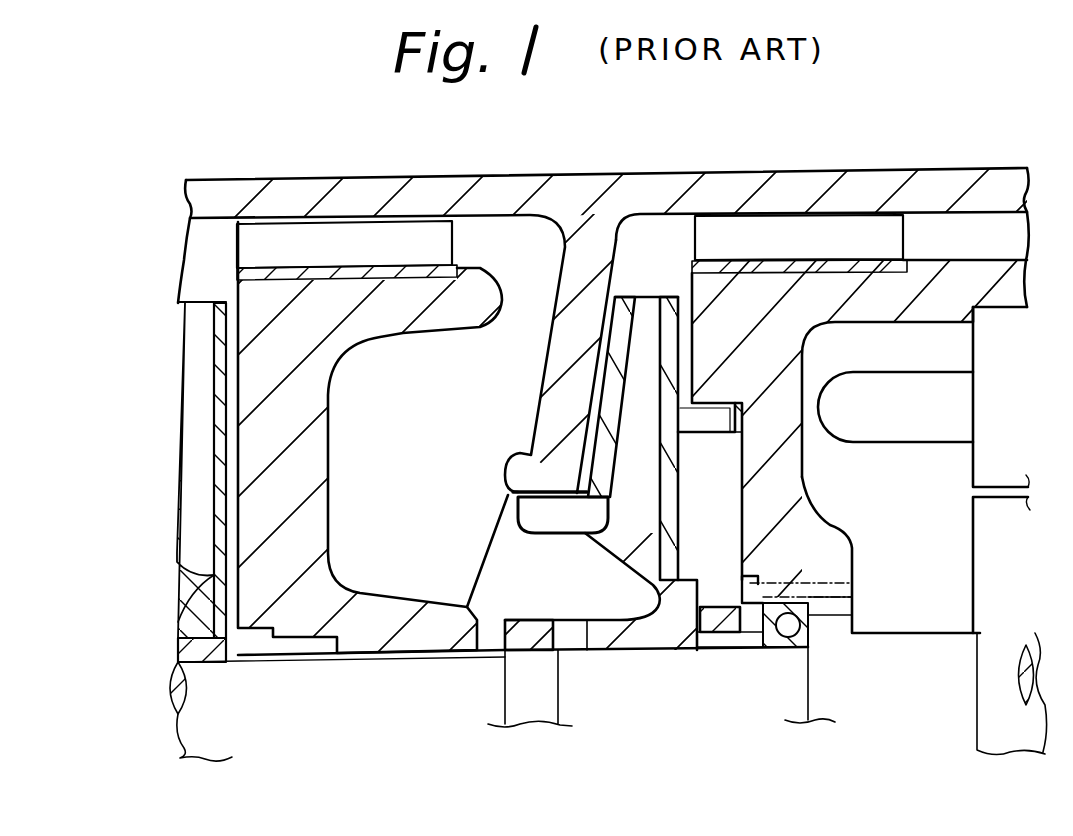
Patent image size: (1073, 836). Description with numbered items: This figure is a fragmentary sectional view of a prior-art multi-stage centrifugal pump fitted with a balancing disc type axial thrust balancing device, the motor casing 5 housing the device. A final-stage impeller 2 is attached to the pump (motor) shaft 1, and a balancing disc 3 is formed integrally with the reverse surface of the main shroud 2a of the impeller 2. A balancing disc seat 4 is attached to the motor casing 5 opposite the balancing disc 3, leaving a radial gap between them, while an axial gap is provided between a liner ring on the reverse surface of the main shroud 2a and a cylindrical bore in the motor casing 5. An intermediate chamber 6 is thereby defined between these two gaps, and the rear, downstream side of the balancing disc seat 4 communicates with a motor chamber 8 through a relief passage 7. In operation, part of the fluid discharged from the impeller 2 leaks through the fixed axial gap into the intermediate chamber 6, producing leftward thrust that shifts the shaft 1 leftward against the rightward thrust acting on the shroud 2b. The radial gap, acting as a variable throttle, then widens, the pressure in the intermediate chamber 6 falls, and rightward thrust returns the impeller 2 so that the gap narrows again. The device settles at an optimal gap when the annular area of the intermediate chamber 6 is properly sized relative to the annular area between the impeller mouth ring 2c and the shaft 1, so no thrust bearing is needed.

The pump shaft 1 is at (392, 650).
The final-stage impeller 2 is at (694, 400).
The main shroud 2a is at (680, 318).
The shroud 2b is at (600, 372).
The impeller mouth ring 2c is at (530, 507).
The balancing disc 3 is at (700, 588).
The balancing disc seat 4 is at (690, 617).
The housing 5 is at (823, 168).
The intermediate chamber 6 is at (723, 485).
The relief passage 7 is at (833, 580).
The motor chamber 8 is at (975, 528).